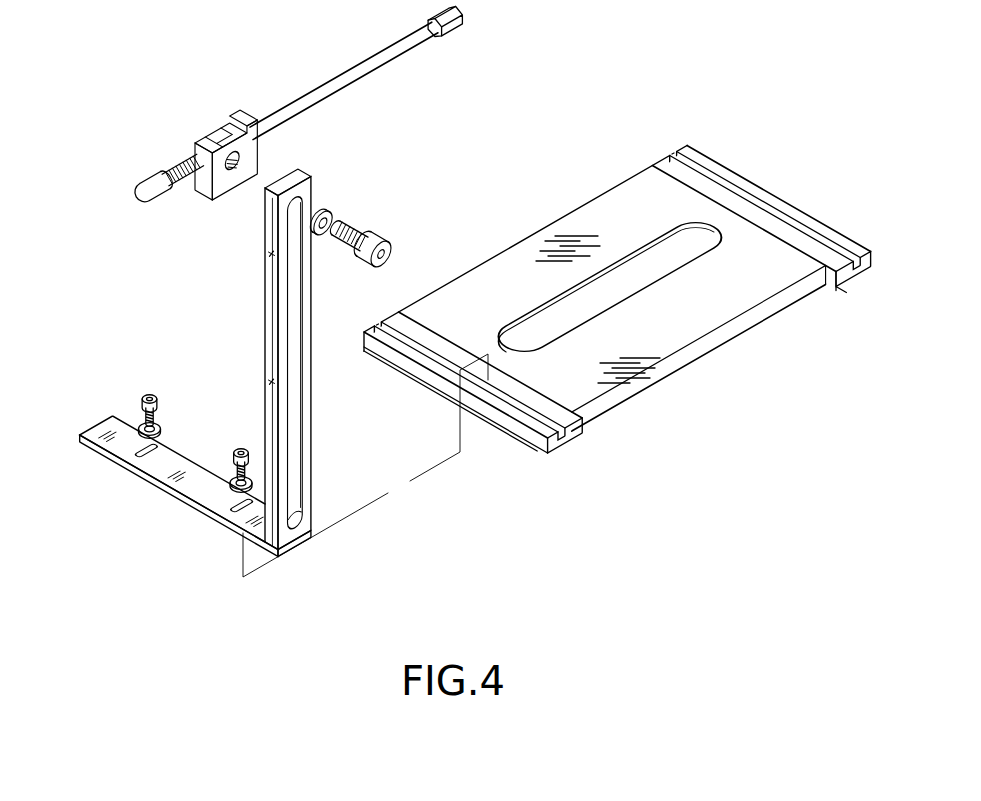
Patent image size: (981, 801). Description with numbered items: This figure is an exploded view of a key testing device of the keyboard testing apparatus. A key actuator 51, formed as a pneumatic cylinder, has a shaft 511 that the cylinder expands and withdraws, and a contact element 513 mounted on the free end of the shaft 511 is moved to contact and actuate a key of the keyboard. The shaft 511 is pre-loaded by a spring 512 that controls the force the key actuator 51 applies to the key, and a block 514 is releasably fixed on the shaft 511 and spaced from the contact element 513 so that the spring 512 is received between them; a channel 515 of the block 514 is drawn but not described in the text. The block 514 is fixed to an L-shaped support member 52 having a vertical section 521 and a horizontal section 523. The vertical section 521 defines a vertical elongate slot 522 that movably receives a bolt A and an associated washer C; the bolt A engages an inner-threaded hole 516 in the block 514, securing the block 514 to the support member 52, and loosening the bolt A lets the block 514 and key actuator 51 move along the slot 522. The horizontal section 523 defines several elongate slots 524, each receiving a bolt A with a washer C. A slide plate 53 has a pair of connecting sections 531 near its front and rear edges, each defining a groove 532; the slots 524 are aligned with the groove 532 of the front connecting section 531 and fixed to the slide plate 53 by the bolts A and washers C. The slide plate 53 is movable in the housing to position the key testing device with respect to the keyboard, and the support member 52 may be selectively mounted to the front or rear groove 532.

The threaded rod 51 is at (341, 80).
The set screw 511 is at (203, 160).
The threaded portion of set screw 512 is at (192, 160).
The knob of set screw 513 is at (147, 193).
The slider block 514 is at (220, 137).
The channel of slider block 515 is at (259, 131).
The threaded hole 516 is at (240, 183).
The L-shaped bracket 52 is at (326, 414).
The vertical plate 521 is at (303, 172).
The vertical slot 522 is at (292, 316).
The base plate 523 is at (188, 478).
The slot in base plate 524 is at (122, 456).
The sliding plate 53 is at (607, 193).
The rail 531 is at (727, 167).
The groove 532 is at (857, 258).
The screw A is at (151, 398).
The washer C is at (330, 212).